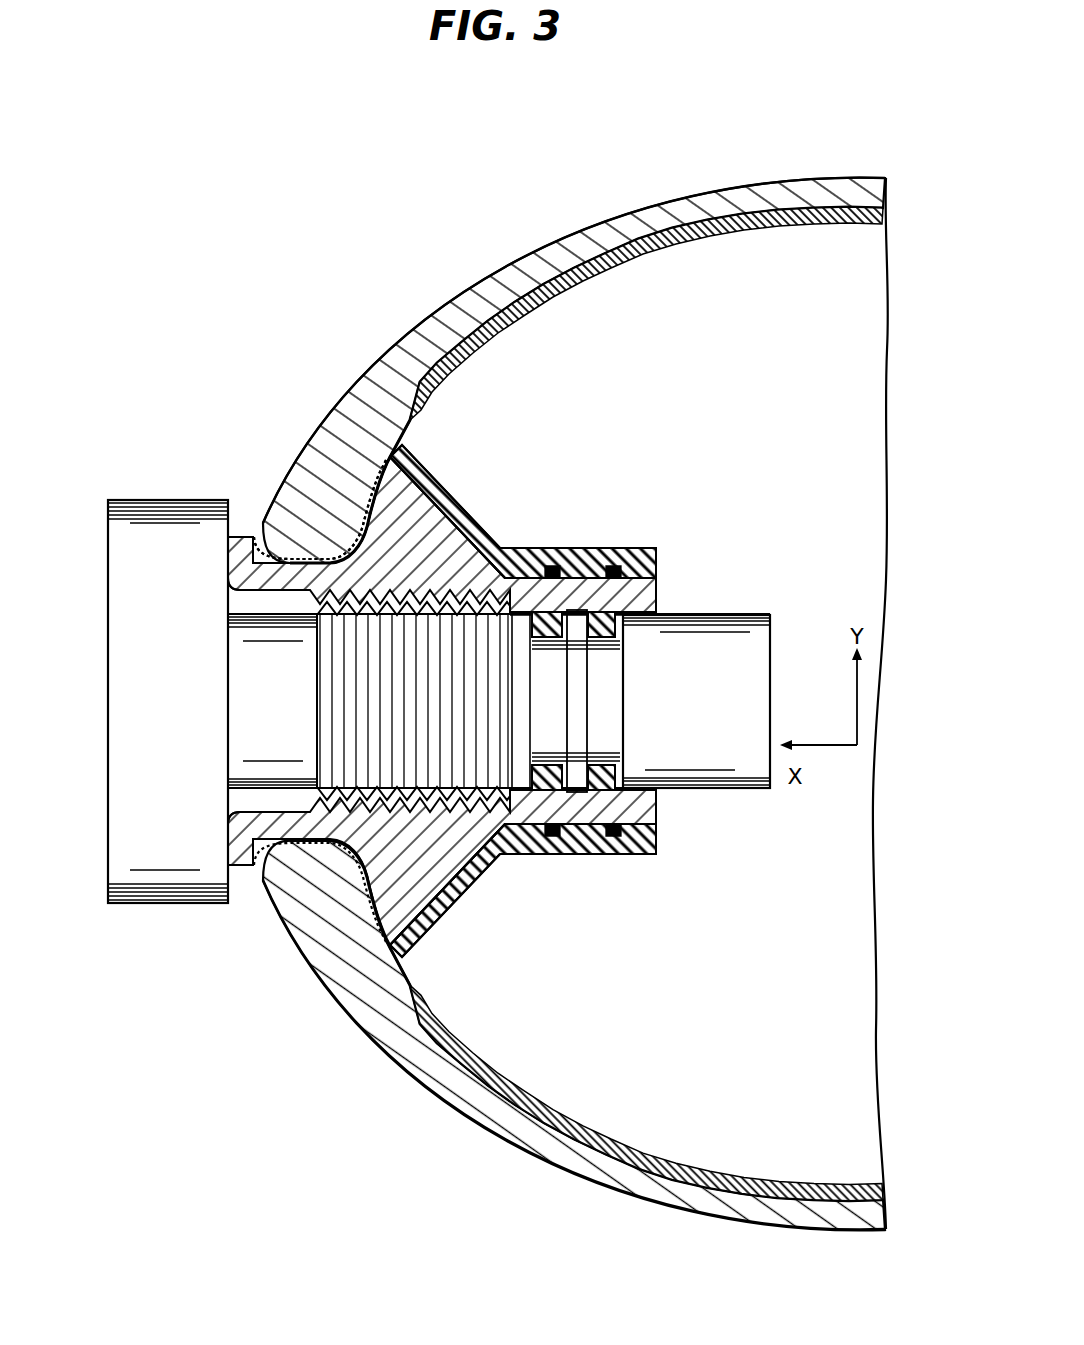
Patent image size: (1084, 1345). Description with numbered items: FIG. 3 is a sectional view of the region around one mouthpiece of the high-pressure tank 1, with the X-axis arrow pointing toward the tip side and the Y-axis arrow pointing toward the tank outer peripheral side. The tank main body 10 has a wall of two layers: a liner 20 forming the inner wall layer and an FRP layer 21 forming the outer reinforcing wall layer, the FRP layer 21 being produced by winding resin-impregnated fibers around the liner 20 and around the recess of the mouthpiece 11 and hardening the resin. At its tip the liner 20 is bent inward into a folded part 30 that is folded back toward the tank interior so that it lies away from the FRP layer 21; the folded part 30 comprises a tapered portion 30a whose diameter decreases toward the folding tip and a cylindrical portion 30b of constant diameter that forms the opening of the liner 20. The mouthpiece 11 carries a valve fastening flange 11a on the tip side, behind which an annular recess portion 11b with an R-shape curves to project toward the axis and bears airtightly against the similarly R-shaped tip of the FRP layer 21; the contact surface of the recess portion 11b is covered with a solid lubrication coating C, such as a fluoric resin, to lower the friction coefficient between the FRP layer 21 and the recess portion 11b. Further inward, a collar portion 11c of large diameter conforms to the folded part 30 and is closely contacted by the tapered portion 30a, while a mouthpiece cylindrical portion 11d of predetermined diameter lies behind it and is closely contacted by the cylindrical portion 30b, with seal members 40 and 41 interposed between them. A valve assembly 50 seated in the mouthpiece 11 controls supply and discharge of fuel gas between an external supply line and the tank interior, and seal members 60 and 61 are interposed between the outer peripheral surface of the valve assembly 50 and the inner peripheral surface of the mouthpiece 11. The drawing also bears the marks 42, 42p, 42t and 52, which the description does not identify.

The high-pressure tank 1 is at (278, 352).
The tank main body 10 is at (558, 234).
The mouthpiece 11 is at (242, 546).
The valve fastening flange 11a is at (214, 546).
The recess portion 11b is at (296, 552).
The collar portion 11c is at (458, 482).
The mouthpiece cylindrical portion 11d is at (520, 590).
The liner 20 is at (539, 308).
The FRP layer 21 is at (370, 392).
The folded part 30 is at (651, 538).
The tapered portion 30a is at (468, 494).
The cylindrical portion 30b is at (594, 546).
The seal member 40 is at (556, 566).
The seal member 41 is at (613, 566).
The pipe 42 is at (256, 604).
The male thread portion of pipe 42p is at (420, 797).
The thread crest of pipe 42t is at (410, 800).
The valve assembly 50 is at (134, 494).
The sealant layer 52 is at (322, 556).
The seal member 60 is at (549, 765).
The seal member 61 is at (608, 628).
The solid lubrication coating C is at (300, 558).